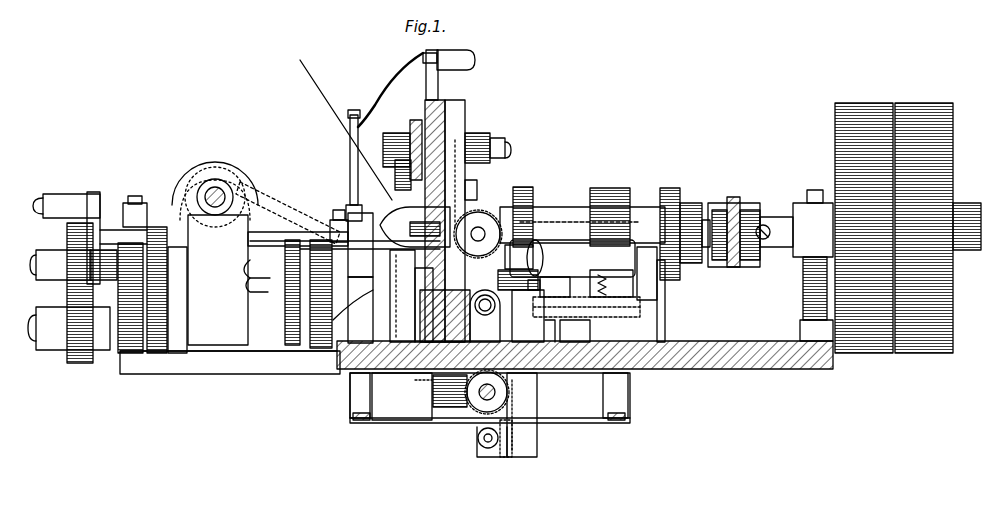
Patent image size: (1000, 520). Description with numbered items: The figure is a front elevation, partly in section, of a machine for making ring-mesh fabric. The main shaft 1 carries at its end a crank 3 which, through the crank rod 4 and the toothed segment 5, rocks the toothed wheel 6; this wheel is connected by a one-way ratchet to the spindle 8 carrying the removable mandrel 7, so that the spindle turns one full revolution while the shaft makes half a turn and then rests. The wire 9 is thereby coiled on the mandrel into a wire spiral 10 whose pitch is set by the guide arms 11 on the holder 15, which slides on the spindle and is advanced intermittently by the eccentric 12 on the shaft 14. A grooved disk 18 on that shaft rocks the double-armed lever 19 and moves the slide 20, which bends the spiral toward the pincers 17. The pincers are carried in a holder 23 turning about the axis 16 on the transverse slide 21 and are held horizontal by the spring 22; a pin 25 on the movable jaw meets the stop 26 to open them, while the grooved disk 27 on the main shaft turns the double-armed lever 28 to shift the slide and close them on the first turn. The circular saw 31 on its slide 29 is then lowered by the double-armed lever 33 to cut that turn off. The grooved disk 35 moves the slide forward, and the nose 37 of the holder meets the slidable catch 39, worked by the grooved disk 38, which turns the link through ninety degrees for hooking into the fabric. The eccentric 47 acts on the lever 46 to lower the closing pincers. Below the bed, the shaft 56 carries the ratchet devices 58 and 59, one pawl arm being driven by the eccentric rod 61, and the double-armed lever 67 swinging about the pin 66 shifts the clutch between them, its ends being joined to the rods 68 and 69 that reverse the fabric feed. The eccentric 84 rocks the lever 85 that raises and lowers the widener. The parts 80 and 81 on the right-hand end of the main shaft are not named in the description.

The main shaft 1 is at (776, 217).
The end crank 3 is at (80, 192).
The crank rod 4 is at (52, 250).
The toothed segment 5 is at (74, 355).
The toothed wheel 6 is at (67, 285).
The removable mandrel 7 is at (402, 296).
The spindle 8 is at (215, 253).
The wire 9 is at (351, 165).
The wire spiral 10 is at (426, 305).
The guide arms 11 is at (350, 226).
The eccentric 12 is at (246, 200).
The shaft 14 is at (215, 178).
The holder 15 is at (353, 278).
The axis 16 is at (524, 258).
The pincers 17 is at (487, 292).
The grooved disk 18 is at (182, 190).
The double-armed lever 19 is at (300, 290).
The slide 20 is at (445, 316).
The transverse slide 21 is at (600, 305).
The spring 22 is at (611, 283).
The holder 23 is at (600, 240).
The pin 25 is at (559, 287).
The stop 26 is at (567, 331).
The grooved disk 27 is at (522, 195).
The double-armed lever 28 is at (521, 306).
The slide 29 is at (477, 192).
The circular saw 31 is at (482, 212).
The double-armed lever 33 is at (468, 135).
The grooved disk 35 is at (620, 196).
The nose 37 is at (649, 273).
The grooved disk 38 is at (690, 203).
The slidable catch 39 is at (662, 290).
The lever 46 is at (392, 133).
The eccentric 47 is at (398, 165).
The shaft 56 is at (480, 412).
The ratchet device 58 is at (433, 378).
The ratchet device 59 is at (520, 402).
The eccentric rod 61 is at (280, 232).
The pin 66 is at (430, 408).
The double-armed lever 67 is at (430, 422).
The rod 68 is at (358, 420).
The rod 69 is at (615, 420).
The screw 80 is at (766, 240).
The clutch 81 is at (748, 203).
The eccentric 84 is at (339, 218).
The lever 85 is at (455, 66).